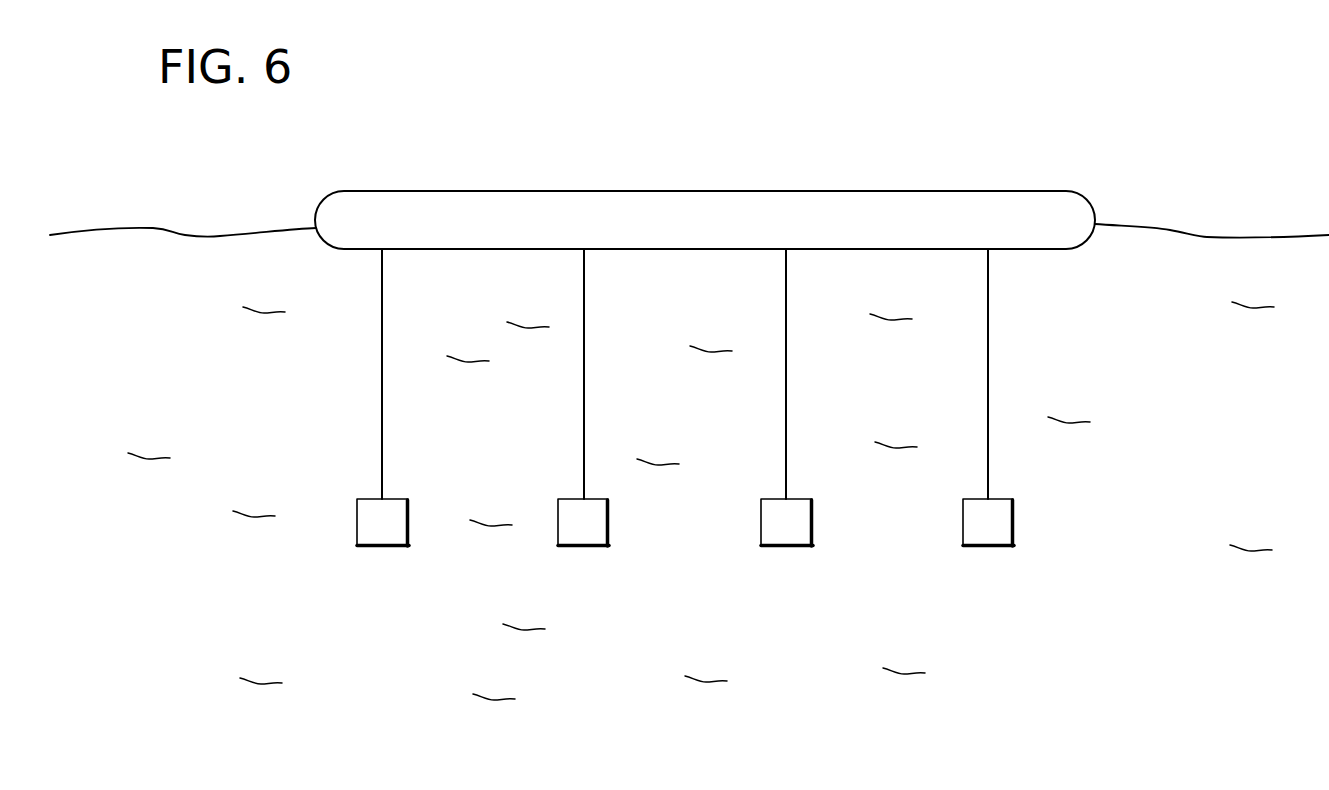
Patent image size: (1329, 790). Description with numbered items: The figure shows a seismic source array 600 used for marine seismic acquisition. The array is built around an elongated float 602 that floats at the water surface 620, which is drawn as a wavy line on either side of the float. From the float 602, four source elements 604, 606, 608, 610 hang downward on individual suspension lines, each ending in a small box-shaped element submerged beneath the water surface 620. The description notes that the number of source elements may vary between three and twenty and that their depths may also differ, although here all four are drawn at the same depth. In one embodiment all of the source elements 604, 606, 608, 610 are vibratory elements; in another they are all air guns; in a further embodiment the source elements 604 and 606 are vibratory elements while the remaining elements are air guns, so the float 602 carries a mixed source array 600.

The source array 600 is at (707, 100).
The float 602 is at (929, 191).
The source element 604 is at (373, 546).
The source element 606 is at (582, 546).
The source element 608 is at (783, 546).
The source element 610 is at (985, 546).
The water surface 620 is at (1207, 237).